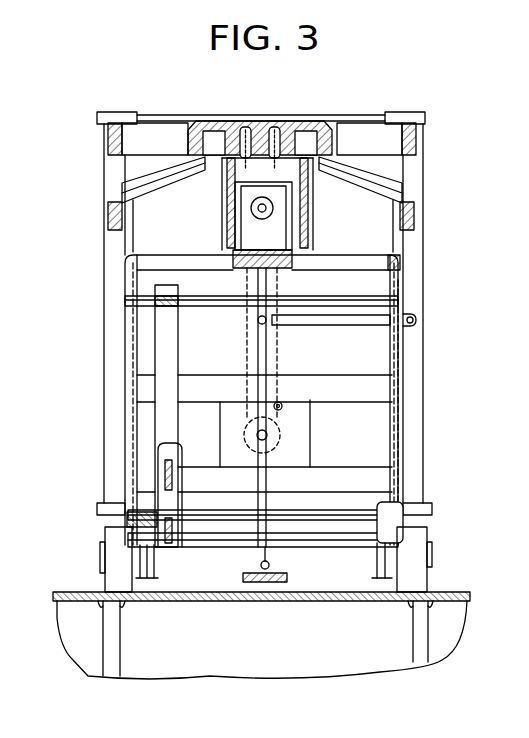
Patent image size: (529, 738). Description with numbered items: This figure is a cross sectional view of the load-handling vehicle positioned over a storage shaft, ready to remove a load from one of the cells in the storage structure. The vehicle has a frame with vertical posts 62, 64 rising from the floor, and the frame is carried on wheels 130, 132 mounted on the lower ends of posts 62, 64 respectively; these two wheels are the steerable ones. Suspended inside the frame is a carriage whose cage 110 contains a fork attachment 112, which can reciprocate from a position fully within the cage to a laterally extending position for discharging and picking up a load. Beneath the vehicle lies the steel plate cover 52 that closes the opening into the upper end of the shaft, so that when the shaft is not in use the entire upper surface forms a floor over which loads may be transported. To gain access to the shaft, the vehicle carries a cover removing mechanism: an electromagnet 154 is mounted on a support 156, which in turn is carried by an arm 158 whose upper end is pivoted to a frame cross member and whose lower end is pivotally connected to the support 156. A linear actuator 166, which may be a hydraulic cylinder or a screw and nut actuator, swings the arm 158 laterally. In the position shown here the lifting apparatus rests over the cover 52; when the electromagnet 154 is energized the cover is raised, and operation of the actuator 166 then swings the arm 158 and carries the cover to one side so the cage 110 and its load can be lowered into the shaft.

The steel plate cover 52 is at (325, 603).
The vertical post 62 is at (413, 408).
The vertical post 64 is at (108, 400).
The cage 110 is at (398, 363).
The fork attachment 112 is at (180, 470).
The wheel 130 is at (418, 573).
The wheel 132 is at (108, 560).
The electromagnet 154 is at (297, 580).
The support 156 is at (243, 572).
The arm 158 is at (262, 349).
The linear actuator 166 is at (318, 322).